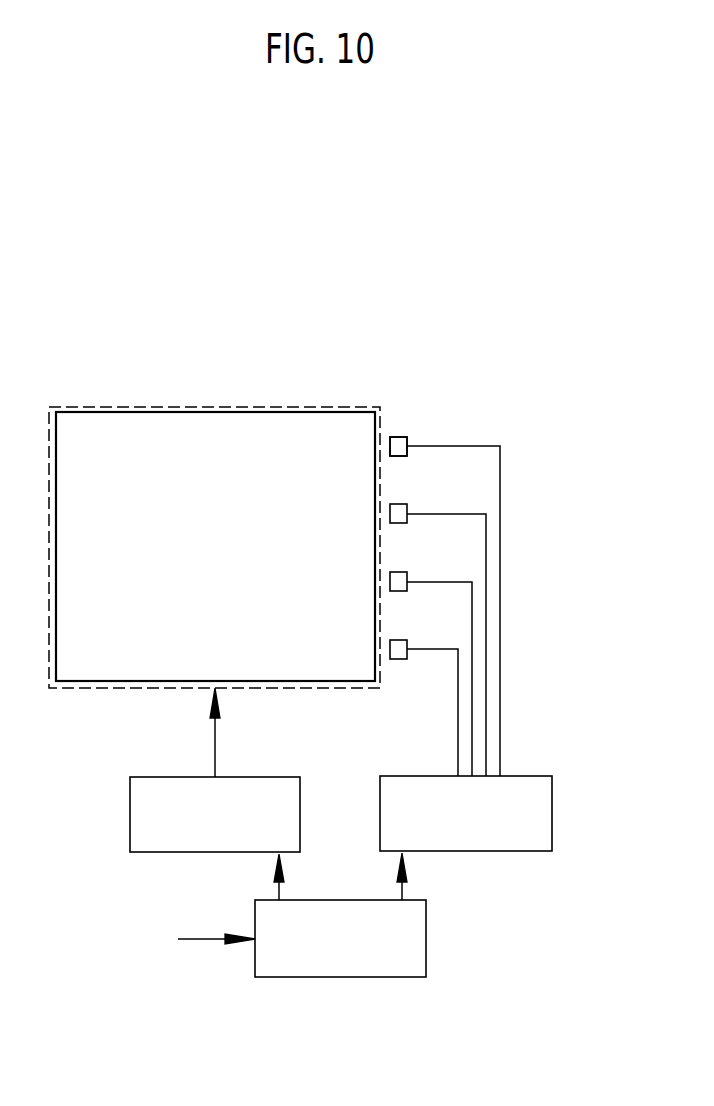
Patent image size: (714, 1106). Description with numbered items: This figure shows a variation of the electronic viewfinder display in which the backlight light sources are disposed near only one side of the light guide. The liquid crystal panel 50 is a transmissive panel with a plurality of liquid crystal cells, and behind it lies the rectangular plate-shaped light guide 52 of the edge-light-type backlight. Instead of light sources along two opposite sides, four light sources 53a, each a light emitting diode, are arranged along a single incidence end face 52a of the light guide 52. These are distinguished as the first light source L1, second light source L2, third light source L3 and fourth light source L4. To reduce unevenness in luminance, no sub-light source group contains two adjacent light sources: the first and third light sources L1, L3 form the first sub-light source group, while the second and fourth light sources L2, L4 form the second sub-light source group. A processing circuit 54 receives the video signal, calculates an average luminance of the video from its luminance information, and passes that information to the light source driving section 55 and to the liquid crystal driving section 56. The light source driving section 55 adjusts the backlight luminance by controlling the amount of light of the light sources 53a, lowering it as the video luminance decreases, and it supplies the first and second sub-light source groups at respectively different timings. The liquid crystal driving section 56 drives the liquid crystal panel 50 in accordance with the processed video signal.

The liquid crystal panel 50 is at (152, 407).
The light guide 52 is at (264, 408).
The incidence end face 52a is at (376, 683).
The light source 53a is at (390, 446).
The first light source L1 is at (397, 437).
The second light source L2 is at (397, 504).
The third light source L3 is at (397, 572).
The fourth light source L4 is at (397, 640).
The processing circuit 54 is at (426, 938).
The light source driving section 55 is at (552, 812).
The liquid crystal driving section 56 is at (300, 812).